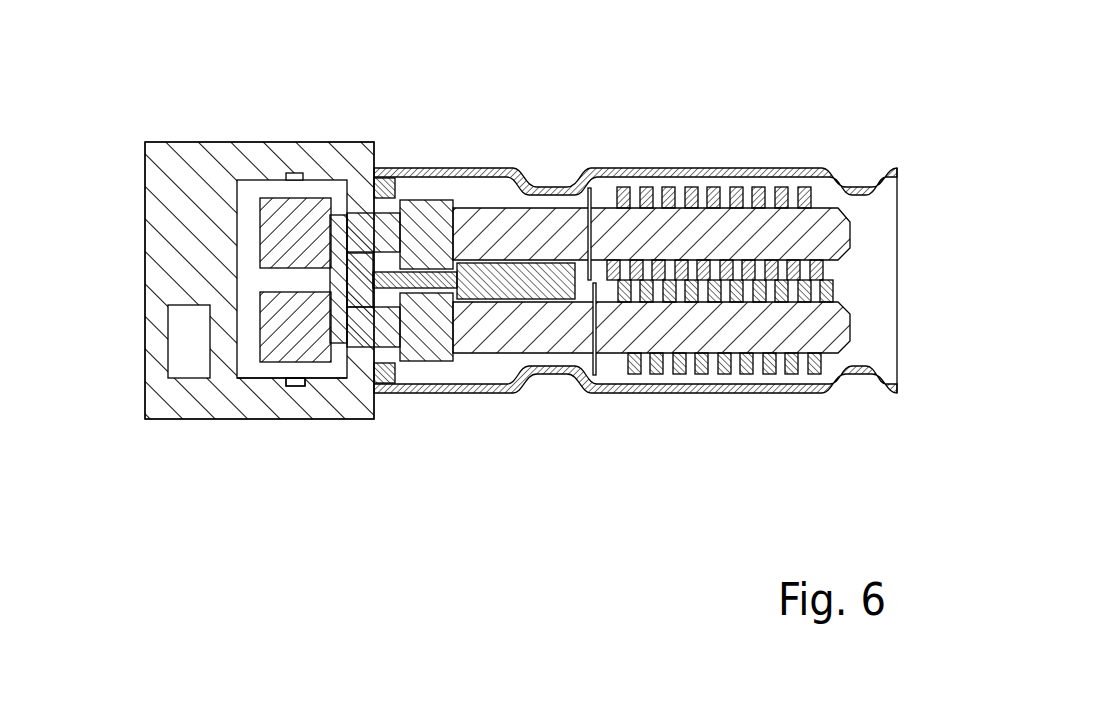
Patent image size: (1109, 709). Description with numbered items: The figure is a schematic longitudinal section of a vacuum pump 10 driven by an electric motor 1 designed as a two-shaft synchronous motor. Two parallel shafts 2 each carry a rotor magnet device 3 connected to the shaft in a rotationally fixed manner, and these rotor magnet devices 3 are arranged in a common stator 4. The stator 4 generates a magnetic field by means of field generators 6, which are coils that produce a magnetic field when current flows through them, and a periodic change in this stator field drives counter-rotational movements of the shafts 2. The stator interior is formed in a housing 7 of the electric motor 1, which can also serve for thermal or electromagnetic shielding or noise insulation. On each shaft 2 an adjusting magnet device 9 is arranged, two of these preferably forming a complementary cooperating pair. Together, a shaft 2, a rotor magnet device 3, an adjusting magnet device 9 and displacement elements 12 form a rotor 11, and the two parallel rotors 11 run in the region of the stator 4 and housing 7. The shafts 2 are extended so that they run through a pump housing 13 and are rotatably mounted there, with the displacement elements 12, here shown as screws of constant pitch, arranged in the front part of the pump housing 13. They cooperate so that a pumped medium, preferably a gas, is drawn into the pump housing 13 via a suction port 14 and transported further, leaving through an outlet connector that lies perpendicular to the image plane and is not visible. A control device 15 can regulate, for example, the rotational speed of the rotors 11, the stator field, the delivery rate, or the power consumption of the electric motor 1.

The electric motor 1 is at (329, 100).
The shaft 2 is at (492, 220).
The rotor magnet device 3 is at (318, 350).
The stator 4 is at (250, 412).
The field generator 6 is at (295, 386).
The housing 7 is at (224, 150).
The adjusting magnet device 9 is at (423, 212).
The vacuum pump 10 is at (636, 73).
The rotor 11 is at (900, 229).
The displacement element 12 is at (743, 190).
The pump housing 13 is at (793, 177).
The suction port 14 is at (900, 337).
The control device 15 is at (187, 352).